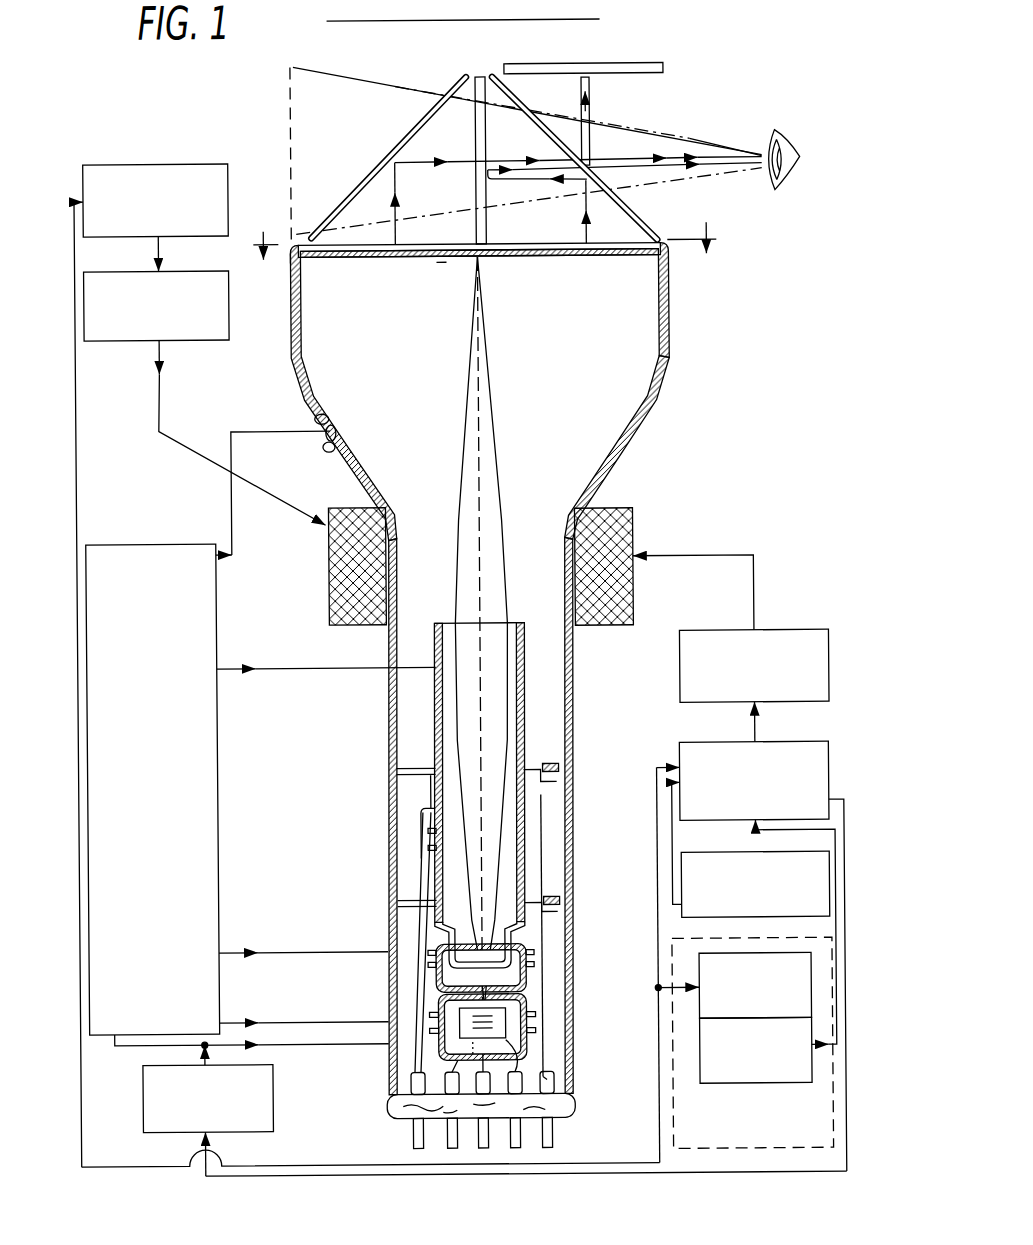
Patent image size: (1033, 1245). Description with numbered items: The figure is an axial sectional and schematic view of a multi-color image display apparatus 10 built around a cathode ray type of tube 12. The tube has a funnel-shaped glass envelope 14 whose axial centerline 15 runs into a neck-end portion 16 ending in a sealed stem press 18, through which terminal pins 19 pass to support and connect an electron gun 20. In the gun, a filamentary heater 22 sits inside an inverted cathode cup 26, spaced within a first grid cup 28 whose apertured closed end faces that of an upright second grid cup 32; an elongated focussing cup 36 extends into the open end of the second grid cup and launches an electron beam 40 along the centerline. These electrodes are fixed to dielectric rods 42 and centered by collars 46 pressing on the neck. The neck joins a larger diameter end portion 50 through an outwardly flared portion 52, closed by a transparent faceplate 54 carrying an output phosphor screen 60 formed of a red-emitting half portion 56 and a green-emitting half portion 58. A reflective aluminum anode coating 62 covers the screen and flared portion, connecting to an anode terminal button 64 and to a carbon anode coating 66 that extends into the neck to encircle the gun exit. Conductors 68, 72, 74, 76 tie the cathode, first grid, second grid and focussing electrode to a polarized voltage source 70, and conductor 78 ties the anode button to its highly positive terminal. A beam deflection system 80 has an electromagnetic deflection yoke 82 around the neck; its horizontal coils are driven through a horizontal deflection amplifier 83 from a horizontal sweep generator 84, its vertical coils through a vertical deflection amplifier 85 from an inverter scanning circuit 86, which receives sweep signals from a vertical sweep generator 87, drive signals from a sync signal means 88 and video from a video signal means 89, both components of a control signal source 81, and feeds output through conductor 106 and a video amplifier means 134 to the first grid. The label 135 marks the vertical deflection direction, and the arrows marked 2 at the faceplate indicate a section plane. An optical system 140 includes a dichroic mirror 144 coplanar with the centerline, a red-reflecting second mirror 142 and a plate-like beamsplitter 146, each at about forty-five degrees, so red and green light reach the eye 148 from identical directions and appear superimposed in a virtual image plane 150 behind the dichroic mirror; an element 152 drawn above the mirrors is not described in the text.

The section line 2- 2 is at (484, 254).
The multi-color image display apparatus 10 is at (703, 403).
The cathode ray type of tube 12 is at (609, 497).
The funnel-shaped envelope 14 is at (575, 688).
The axial centerline 15 is at (487, 306).
The neck-end portion 16 is at (572, 713).
The stem press 18 is at (565, 1104).
The terminal pins 19 is at (479, 1136).
The electron gun 20 is at (537, 758).
The filamentary heater 22 is at (535, 1043).
The cathode cup 26 is at (508, 1002).
The first grid cup 28 is at (525, 984).
The second grid cup 32 is at (525, 941).
The focussing cup 36 is at (522, 864).
The electron beam 40 is at (476, 346).
The dielectric rods 42 is at (540, 807).
The collars 46 is at (411, 769).
The larger diameter end portion 50 is at (676, 306).
The flared portion 52 is at (648, 411).
The faceplate 54 is at (548, 244).
The half portion 56 is at (391, 259).
The half portion 58 is at (575, 259).
The output phosphor screen 60 is at (448, 266).
The anode coating 62 is at (349, 259).
The anode terminal button 64 is at (335, 411).
The anode coating 66 is at (392, 423).
The conductor 68 is at (290, 1019).
The polarized voltage source 70 is at (98, 545).
The conductor 72 is at (305, 1046).
The conductor 74 is at (304, 949).
The conductor 76 is at (333, 672).
The conductor 78 is at (235, 531).
The beam deflection system 80 is at (692, 554).
The control signal source 81 is at (770, 1130).
The electromagnetic deflection yoke 82 is at (349, 507).
The horizontal deflection amplifier 83 is at (136, 344).
The horizontal sweep generator 84 is at (136, 236).
The vertical deflection amplifier 85 is at (806, 632).
The inverter scanning circuit 86 is at (811, 744).
The vertical sweep generator 87 is at (686, 856).
The sync signal means 88 is at (697, 972).
The video signal means 89 is at (697, 1055).
The conductor 106 is at (843, 1155).
The video amplifier means 134 is at (272, 1124).
The vertical deflection direction 135 is at (403, 21).
The optical system 140 is at (642, 97).
The second mirror 142 is at (399, 151).
The dichroic mirror 144 is at (484, 130).
The beamsplitter 146 is at (547, 128).
The eye 148 is at (796, 159).
The virtual image plane 150 is at (298, 136).
The light plate 152 is at (637, 67).